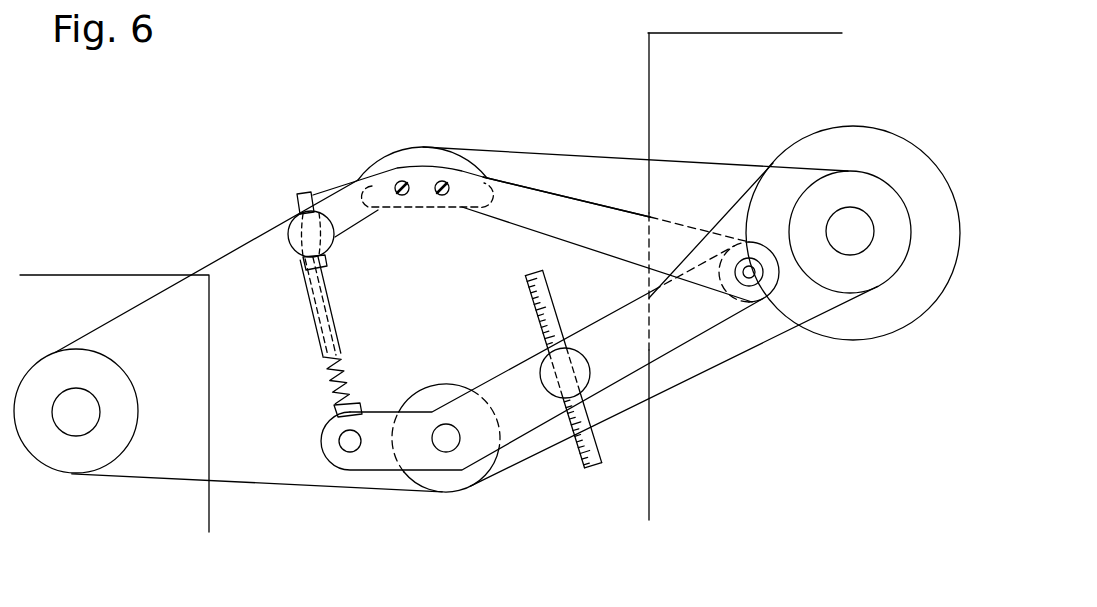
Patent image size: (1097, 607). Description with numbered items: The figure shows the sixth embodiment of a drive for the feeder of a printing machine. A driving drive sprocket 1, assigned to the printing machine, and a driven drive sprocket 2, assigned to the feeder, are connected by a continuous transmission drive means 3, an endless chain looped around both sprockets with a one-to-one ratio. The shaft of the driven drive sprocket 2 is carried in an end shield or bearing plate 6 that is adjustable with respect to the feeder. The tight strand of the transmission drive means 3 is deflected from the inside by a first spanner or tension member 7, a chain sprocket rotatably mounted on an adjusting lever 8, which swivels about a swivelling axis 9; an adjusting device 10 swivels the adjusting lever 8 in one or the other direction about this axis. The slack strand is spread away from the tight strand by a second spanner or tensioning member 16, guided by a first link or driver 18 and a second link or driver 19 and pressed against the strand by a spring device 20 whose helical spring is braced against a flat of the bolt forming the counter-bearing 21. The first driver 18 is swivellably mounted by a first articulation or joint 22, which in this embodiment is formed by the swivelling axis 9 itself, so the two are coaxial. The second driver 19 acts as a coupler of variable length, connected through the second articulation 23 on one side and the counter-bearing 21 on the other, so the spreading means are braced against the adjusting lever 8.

The driving drive sprocket 1 is at (83, 462).
The driven drive sprocket 2 is at (879, 194).
The transmission drive means 3 is at (697, 375).
The end shield or bearing plate 6 is at (897, 322).
The first spanner or tension member 7 is at (442, 494).
The adjusting lever 8 is at (610, 365).
The swivelling axis 9 is at (750, 265).
The adjusting device 10 is at (591, 485).
The second spanner or tensioning member 16 is at (398, 152).
The first link or driver 18 is at (535, 192).
The second link or driver 19 is at (330, 315).
The spring device 20 is at (355, 368).
The counter-bearing 21 is at (293, 230).
The first articulation or joint 22 is at (757, 300).
The second articulation 23 is at (324, 441).